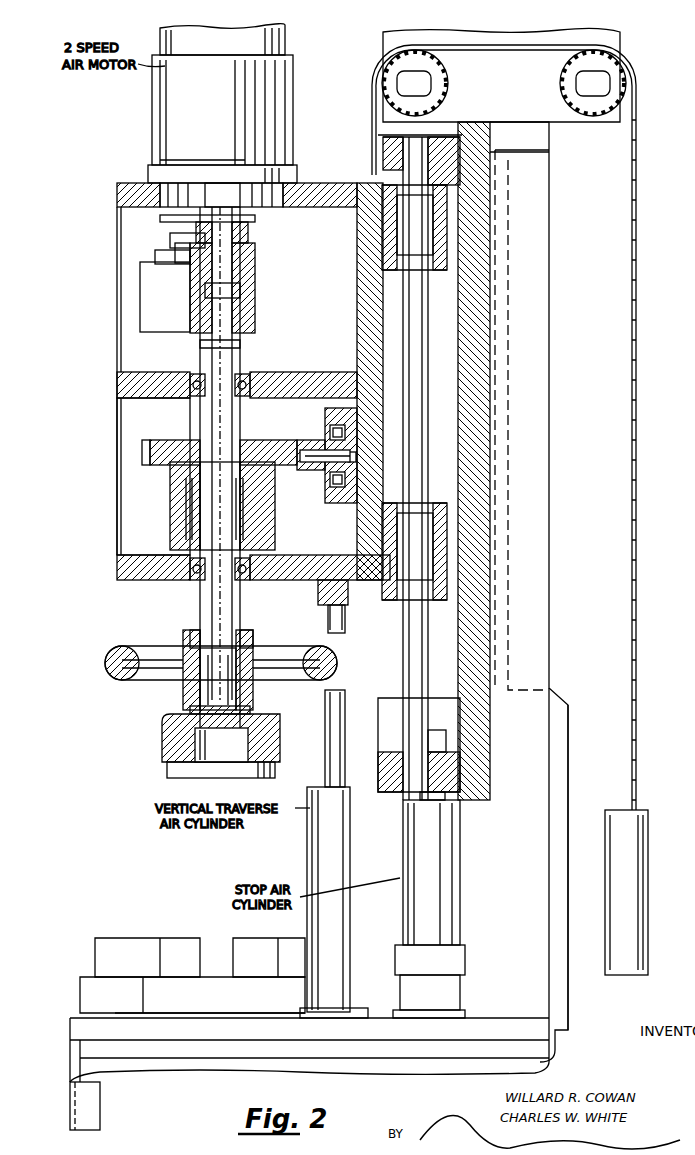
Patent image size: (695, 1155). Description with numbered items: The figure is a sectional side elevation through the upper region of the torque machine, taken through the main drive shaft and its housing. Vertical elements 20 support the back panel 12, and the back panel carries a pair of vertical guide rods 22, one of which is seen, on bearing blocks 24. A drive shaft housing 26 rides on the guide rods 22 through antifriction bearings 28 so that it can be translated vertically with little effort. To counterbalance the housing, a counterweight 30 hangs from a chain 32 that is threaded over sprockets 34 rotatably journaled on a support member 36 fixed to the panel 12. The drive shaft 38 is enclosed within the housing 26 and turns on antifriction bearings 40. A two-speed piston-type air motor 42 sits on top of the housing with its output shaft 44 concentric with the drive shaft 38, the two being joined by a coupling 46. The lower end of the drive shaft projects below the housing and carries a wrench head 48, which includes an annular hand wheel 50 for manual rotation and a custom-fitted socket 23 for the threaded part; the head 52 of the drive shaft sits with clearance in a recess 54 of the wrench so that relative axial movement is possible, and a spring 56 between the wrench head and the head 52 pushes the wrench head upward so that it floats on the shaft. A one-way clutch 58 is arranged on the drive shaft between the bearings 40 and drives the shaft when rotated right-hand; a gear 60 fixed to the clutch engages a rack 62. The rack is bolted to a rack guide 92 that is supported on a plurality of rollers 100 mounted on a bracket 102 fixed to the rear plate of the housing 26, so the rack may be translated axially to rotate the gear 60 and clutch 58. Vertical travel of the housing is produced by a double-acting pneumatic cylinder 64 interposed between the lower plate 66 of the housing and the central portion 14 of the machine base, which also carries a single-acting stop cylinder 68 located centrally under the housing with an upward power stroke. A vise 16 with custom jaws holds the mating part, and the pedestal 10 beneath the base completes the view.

The base pedestal 10 is at (70, 1115).
The back panel 12 is at (490, 500).
The central portion of the machine base 14 is at (70, 1033).
The vise 16 is at (174, 946).
The vertical elements 20 is at (560, 1018).
The vertical guide rods 22 is at (428, 350).
The socket 23 is at (168, 770).
The bearing blocks 24 is at (455, 140).
The drive shaft housing 26 is at (120, 352).
The antifriction bearings 28 is at (424, 232).
The counterweight 30 is at (648, 886).
The chain 32 is at (636, 343).
The sprockets 34 is at (408, 70).
The support member 36 is at (556, 115).
The drive shaft 38 is at (202, 608).
The antifriction bearings 40 is at (207, 384).
The air motor 42 is at (165, 105).
The output shaft 44 is at (240, 238).
The coupling 46 is at (250, 297).
The wrench head 48 is at (165, 735).
The annular hand wheel 50 is at (112, 675).
The head of the drive shaft 52 is at (224, 686).
The recess 54 is at (250, 712).
The spring 56 is at (255, 636).
The one-way clutch 58 is at (268, 512).
The gear 60 is at (180, 440).
The rack 62 is at (305, 440).
The pneumatic cylinder 64 is at (312, 856).
The lower plate 66 is at (306, 582).
The stop cylinder 68 is at (408, 914).
The rack guide 92 is at (318, 470).
The rollers 100 is at (338, 425).
The bracket 102 is at (355, 420).